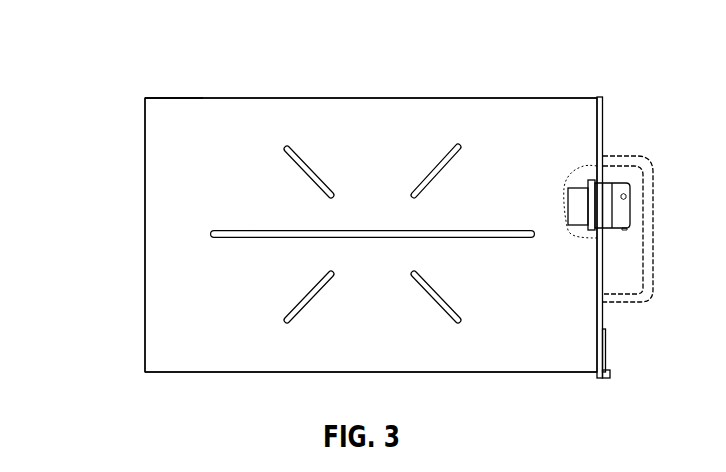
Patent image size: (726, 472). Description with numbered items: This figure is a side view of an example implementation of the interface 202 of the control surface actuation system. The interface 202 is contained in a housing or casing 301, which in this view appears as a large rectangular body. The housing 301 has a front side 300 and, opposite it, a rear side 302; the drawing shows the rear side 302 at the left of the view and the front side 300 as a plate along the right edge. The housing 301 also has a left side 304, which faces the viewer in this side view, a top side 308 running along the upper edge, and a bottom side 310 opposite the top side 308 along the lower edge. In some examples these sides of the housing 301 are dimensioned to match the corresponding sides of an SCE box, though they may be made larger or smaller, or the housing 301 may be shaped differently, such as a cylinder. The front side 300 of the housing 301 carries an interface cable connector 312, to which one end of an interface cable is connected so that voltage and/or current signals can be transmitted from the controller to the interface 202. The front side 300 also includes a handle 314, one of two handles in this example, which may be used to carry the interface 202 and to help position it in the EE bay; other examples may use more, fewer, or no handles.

The interface 202 is at (207, 40).
The front side 300 is at (603, 135).
The housing 301 is at (435, 115).
The rear side 302 is at (145, 138).
The left side 304 is at (203, 125).
The top side 308 is at (340, 98).
The bottom side 310 is at (273, 372).
The interface cable connector 312 is at (627, 203).
The handle 314 is at (640, 157).